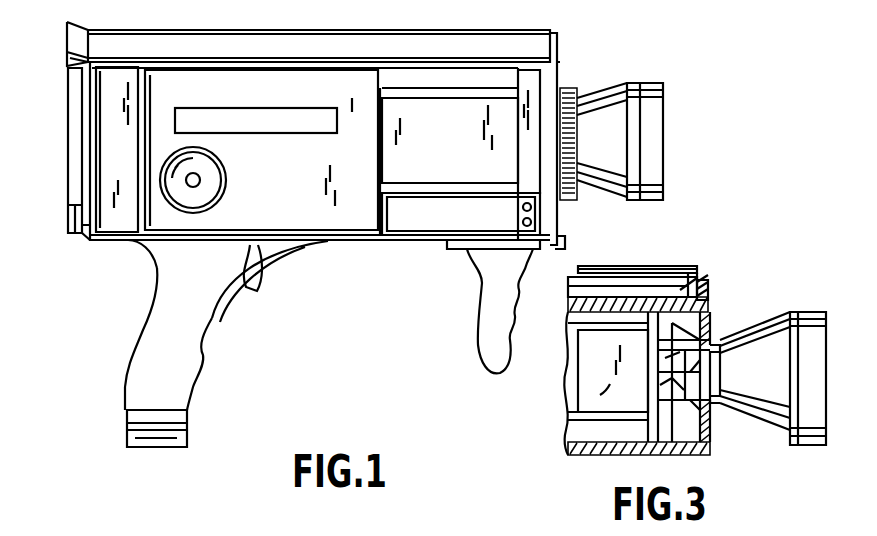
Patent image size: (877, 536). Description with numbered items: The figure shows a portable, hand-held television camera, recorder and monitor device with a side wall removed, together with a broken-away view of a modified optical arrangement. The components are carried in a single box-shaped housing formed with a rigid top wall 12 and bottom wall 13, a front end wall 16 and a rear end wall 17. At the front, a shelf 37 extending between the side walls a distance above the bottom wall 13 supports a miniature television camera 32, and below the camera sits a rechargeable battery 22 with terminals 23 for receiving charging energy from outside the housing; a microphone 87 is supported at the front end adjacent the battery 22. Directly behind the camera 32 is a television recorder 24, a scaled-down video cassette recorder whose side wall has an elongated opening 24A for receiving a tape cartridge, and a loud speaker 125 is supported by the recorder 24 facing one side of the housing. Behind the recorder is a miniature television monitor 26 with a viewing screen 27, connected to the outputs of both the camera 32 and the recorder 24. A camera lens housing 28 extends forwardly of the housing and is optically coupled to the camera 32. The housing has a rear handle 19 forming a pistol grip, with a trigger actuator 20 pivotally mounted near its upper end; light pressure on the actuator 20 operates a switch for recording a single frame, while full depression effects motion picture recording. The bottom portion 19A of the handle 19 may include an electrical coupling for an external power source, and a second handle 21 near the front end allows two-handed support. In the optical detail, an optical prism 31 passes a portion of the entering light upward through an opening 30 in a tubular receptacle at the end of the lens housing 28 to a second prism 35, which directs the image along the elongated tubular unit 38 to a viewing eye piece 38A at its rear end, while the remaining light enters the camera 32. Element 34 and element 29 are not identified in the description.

In FIG. 1, the top wall 12 is at (467, 62).
In FIG. 1, the viewing eye piece 38A is at (68, 24).
In FIG. 1, the elongated tubular housing defining unit 38 is at (552, 33).
In FIG. 1, the front end wall 16 is at (555, 72).
In FIG. 1, the camera lens housing 28 is at (640, 84).
In FIG. 3, the camera lens housing 28 is at (808, 313).
In FIG. 1, the miniature television monitor 26 is at (129, 169).
In FIG. 1, the television recorder 24 is at (267, 197).
In FIG. 1, the elongated opening 24A is at (287, 134).
In FIG. 1, the loud speaker 125 is at (177, 192).
In FIG. 1, the miniature television camera 32 is at (458, 158).
In FIG. 3, the miniature television camera 32 is at (576, 402).
In FIG. 1, the rechargeable battery 22 is at (462, 228).
In FIG. 1, the terminals 23 is at (534, 224).
In FIG. 1, the microphone 87 is at (578, 243).
In FIG. 1, the viewing screen 27 is at (70, 205).
In FIG. 1, the rear end wall 17 is at (82, 238).
In FIG. 1, the bottom wall 13 is at (128, 241).
In FIG. 1, the trigger actuator 20 is at (253, 306).
In FIG. 1, the rear handle 19 is at (135, 383).
In FIG. 1, the bottom portion of the handle 19A is at (187, 437).
In FIG. 1, the second handle 21 is at (481, 357).
In FIG. 1, the shelf 37 is at (424, 193).
In FIG. 3, the top bar 34 is at (620, 266).
In FIG. 3, the second prism 35 is at (692, 277).
In FIG. 3, the opening 30 is at (700, 340).
In FIG. 3, the nozzle collar 29 is at (717, 350).
In FIG. 3, the optical prism 31 is at (702, 417).